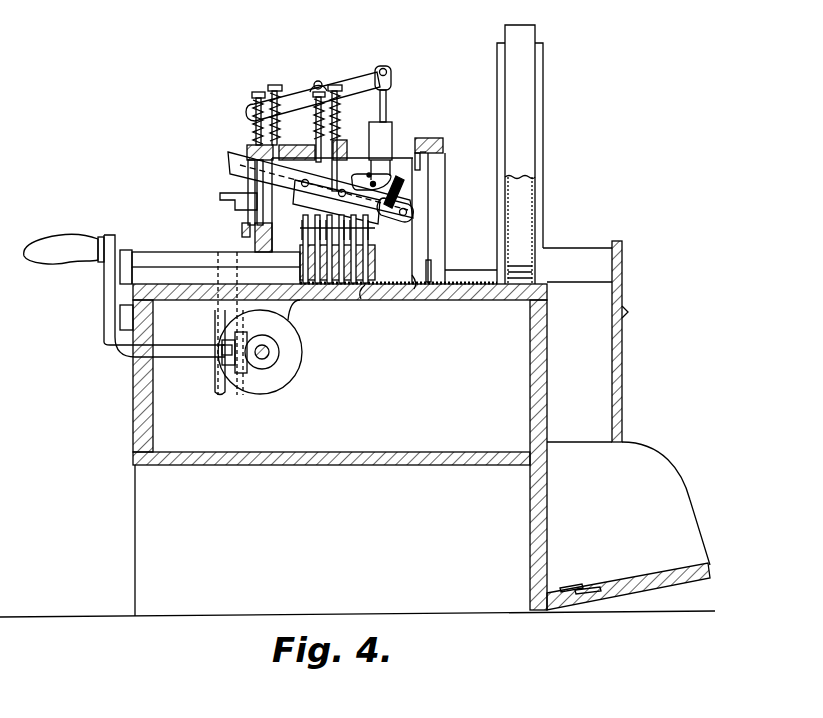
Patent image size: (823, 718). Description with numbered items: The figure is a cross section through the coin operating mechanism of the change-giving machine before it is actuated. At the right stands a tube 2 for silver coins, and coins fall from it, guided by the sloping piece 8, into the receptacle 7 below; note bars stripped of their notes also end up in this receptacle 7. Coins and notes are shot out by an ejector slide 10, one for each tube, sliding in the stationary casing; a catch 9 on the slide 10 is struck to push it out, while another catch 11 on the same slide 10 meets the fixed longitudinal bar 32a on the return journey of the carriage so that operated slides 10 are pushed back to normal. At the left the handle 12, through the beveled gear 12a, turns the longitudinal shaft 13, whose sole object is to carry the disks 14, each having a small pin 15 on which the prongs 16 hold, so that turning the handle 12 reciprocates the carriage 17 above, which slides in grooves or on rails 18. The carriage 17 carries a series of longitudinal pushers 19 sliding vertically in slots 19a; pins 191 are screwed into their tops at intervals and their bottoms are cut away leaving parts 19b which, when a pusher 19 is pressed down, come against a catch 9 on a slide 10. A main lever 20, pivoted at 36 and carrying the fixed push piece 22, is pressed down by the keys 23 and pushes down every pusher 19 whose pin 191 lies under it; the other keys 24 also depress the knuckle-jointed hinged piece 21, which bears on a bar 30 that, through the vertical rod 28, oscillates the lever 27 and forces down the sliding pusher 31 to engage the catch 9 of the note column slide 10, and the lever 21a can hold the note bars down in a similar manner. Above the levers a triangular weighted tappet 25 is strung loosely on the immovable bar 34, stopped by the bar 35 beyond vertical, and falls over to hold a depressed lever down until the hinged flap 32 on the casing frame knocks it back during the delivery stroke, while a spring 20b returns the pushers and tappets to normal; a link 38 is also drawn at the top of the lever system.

The tube for silver coins 2 is at (527, 72).
The receptacle 7 is at (628, 526).
The sloping piece 8 is at (579, 425).
The catch 9 is at (374, 300).
The ejector slide 10 is at (466, 282).
The catch 11 is at (420, 290).
The handle 12 is at (62, 238).
The beveled gear 12a is at (245, 370).
The longitudinal shaft 13 is at (268, 350).
The disk 14 is at (296, 365).
The pin 15 is at (225, 365).
The prong 16 is at (220, 395).
The carriage 17 is at (146, 252).
The rail 18 is at (128, 278).
The pusher 19 is at (375, 252).
The slot 19a is at (303, 218).
The cut-away part of pusher 19b is at (290, 300).
The pin 191 is at (370, 228).
The main lever 20 is at (296, 145).
The spring 20b is at (400, 188).
The hinged piece 21 is at (232, 165).
The lever 21a is at (220, 197).
The push piece 22 is at (403, 190).
The key 23 is at (320, 92).
The key 24 is at (275, 85).
The triangular tappet 25 is at (375, 185).
The lever 27 is at (297, 100).
The vertical rod 28 is at (250, 140).
The bar 30 is at (252, 232).
The sliding pusher 31 is at (386, 100).
The hinged flap 32 is at (443, 140).
The longitudinal bar 32a is at (430, 262).
The bar 34 is at (375, 188).
The bar 35 is at (368, 174).
The pivot 36 is at (410, 213).
The link 38 is at (385, 78).